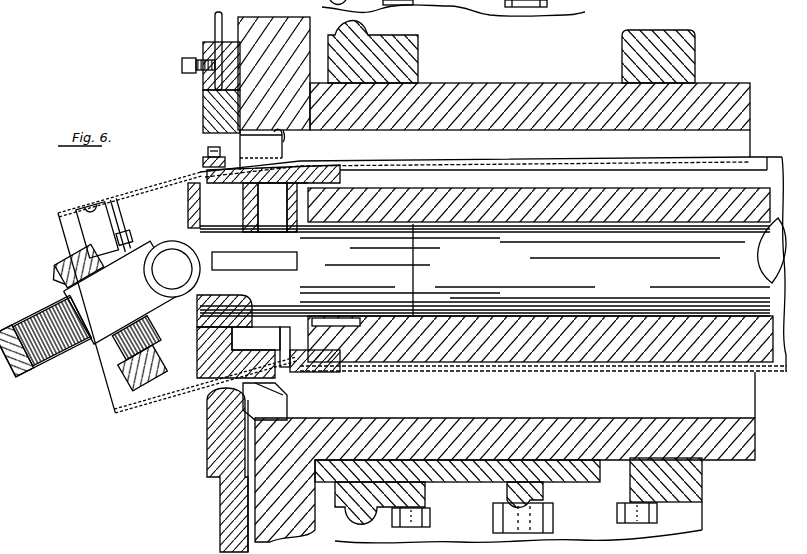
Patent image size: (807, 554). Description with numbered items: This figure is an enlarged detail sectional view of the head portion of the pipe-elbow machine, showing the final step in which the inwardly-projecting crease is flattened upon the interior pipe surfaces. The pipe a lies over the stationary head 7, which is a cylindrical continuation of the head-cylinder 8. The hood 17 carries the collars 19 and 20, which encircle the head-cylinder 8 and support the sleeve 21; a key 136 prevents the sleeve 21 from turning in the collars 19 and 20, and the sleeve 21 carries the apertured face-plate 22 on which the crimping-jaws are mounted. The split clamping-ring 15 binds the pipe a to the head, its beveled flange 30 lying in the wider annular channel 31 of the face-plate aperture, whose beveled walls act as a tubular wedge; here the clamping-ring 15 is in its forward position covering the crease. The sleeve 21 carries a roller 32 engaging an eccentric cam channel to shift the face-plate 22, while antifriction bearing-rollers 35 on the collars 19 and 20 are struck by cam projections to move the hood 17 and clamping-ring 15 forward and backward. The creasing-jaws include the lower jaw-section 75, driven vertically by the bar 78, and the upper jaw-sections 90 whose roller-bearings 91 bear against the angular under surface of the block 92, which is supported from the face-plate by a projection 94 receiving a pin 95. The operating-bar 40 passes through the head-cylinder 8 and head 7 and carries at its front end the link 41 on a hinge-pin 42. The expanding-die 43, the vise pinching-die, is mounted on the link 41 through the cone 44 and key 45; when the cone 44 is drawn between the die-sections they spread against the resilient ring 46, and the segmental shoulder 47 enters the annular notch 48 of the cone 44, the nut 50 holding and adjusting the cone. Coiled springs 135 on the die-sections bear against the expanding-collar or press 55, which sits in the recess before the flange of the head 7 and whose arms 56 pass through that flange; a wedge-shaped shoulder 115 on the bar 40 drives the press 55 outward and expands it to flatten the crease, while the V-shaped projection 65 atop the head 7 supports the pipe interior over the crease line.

The pin 95 is at (215, 23).
The projection 94 is at (203, 46).
The block 92 is at (203, 118).
The roller-bearings 91 is at (198, 148).
The upper jaw-sections 90 is at (203, 162).
The face-plate 22 is at (274, 24).
The collar 19 is at (370, 53).
The sleeve 21 is at (500, 93).
The collar 20 is at (622, 55).
The flange 30 is at (258, 136).
The annular channel 31 is at (284, 137).
The pipe a is at (452, 170).
The tapered or V-shaped projection 65 is at (177, 283).
The segmental shoulder 47 is at (133, 215).
The key 45 is at (133, 220).
The expanding-die 43 is at (97, 230).
The annular notch 48 is at (45, 278).
The cone 44 is at (69, 278).
The hinge-pin 42 is at (172, 269).
The link 41 is at (137, 285).
The nut 50 is at (53, 349).
The coiled springs 135 is at (151, 331).
The expanding-collar (press) 55 is at (197, 349).
The arms 56 is at (256, 338).
The beveled or wedge-shaped shoulder 115 is at (216, 305).
The head 7 is at (272, 207).
The operating-bar 40 is at (493, 267).
The head-cylinder 8 is at (658, 355).
The wire or split ring 46 is at (164, 369).
The split clamping-ring 15 is at (265, 401).
The lower jaw-section 75 is at (207, 432).
The bar 78 is at (232, 522).
The key 136 is at (401, 470).
The hood 17 is at (400, 503).
The bearing wheel or roller 32 is at (541, 508).
The antifriction bearing-rollers 35 is at (617, 513).